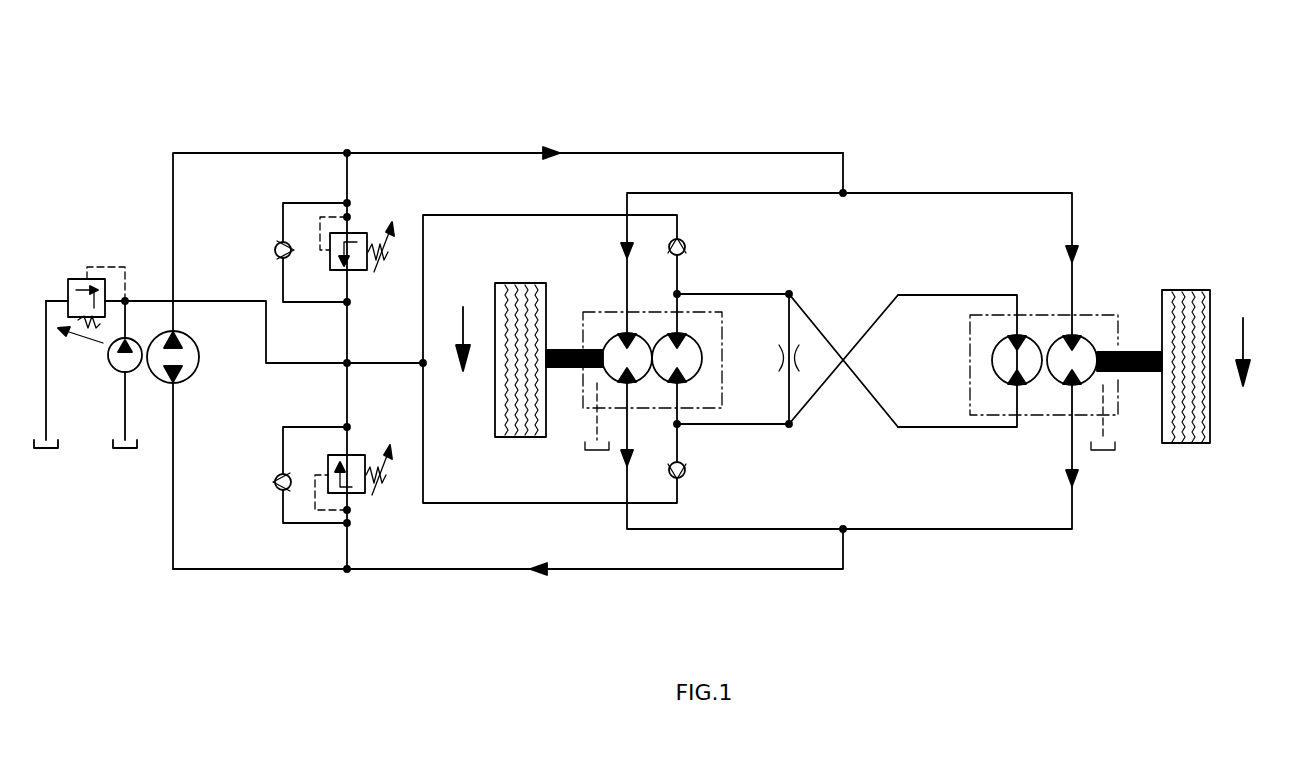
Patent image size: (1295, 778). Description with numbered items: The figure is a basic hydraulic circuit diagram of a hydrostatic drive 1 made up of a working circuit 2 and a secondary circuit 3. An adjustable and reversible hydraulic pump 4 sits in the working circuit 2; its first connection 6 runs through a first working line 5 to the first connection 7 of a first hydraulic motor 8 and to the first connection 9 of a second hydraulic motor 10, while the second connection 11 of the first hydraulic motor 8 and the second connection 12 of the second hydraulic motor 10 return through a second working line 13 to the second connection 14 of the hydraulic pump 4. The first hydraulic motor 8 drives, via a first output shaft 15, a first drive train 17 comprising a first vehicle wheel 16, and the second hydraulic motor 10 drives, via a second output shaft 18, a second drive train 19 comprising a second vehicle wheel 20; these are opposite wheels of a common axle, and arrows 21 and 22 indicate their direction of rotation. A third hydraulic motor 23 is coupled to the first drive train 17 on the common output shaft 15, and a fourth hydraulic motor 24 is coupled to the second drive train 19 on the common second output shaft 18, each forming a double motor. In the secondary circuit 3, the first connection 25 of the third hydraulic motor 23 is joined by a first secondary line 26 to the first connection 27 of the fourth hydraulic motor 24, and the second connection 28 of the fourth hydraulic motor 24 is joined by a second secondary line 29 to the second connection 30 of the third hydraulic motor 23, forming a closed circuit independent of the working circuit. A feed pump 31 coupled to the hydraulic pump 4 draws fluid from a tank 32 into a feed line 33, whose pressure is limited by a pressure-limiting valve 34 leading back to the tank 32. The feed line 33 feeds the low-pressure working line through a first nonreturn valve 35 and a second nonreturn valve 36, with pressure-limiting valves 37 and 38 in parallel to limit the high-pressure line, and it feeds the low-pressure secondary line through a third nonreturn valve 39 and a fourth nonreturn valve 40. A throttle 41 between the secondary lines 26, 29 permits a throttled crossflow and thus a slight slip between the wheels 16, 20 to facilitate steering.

The hydrostatic drive 1 is at (579, 122).
The working circuit 2 is at (248, 146).
The secondary circuit 3 is at (847, 356).
The hydraulic pump 4 is at (193, 359).
The first working line 5 is at (760, 152).
The first connection of the hydraulic pump 6 is at (176, 330).
The first connection of the first hydraulic motor 7 is at (625, 330).
The first hydraulic motor 8 is at (665, 345).
The first connection of the second hydraulic motor 9 is at (1090, 357).
The second hydraulic motor 10 is at (1083, 350).
The second connection of the first hydraulic motor 11 is at (630, 387).
The second connection of the second hydraulic motor 12 is at (1068, 385).
The second working line 13 is at (578, 571).
The second connection of the hydraulic pump 14 is at (178, 383).
The first output shaft 15 is at (563, 369).
The first vehicle wheel 16 is at (535, 293).
The first drive train 17 is at (550, 359).
The second output shaft 18 is at (1132, 375).
The second drive train 19 is at (1204, 301).
The second vehicle wheel 20 is at (1185, 300).
The arrow 21 is at (460, 343).
The arrow 22 is at (1247, 355).
The third hydraulic motor 23 is at (665, 363).
The fourth hydraulic motor 24 is at (1000, 362).
The first connection of the third hydraulic motor 25 is at (680, 334).
The first secondary line 26 is at (904, 430).
The first connection of the fourth hydraulic motor 27 is at (1020, 385).
The second connection of the fourth hydraulic motor 28 is at (1031, 357).
The second secondary line 29 is at (959, 295).
The second connection of the third hydraulic motor 30 is at (685, 380).
The feed pump 31 is at (122, 363).
The tank 32 is at (122, 466).
The feed line 33 is at (267, 337).
The pressure-limiting valve 34 is at (87, 279).
The first nonreturn valve 35 is at (278, 243).
The second nonreturn valve 36 is at (275, 485).
The pressure-limiting valve 37 is at (356, 255).
The pressure-limiting valve 38 is at (358, 480).
The third nonreturn valve 39 is at (690, 247).
The fourth nonreturn valve 40 is at (690, 463).
The throttle 41 is at (798, 362).